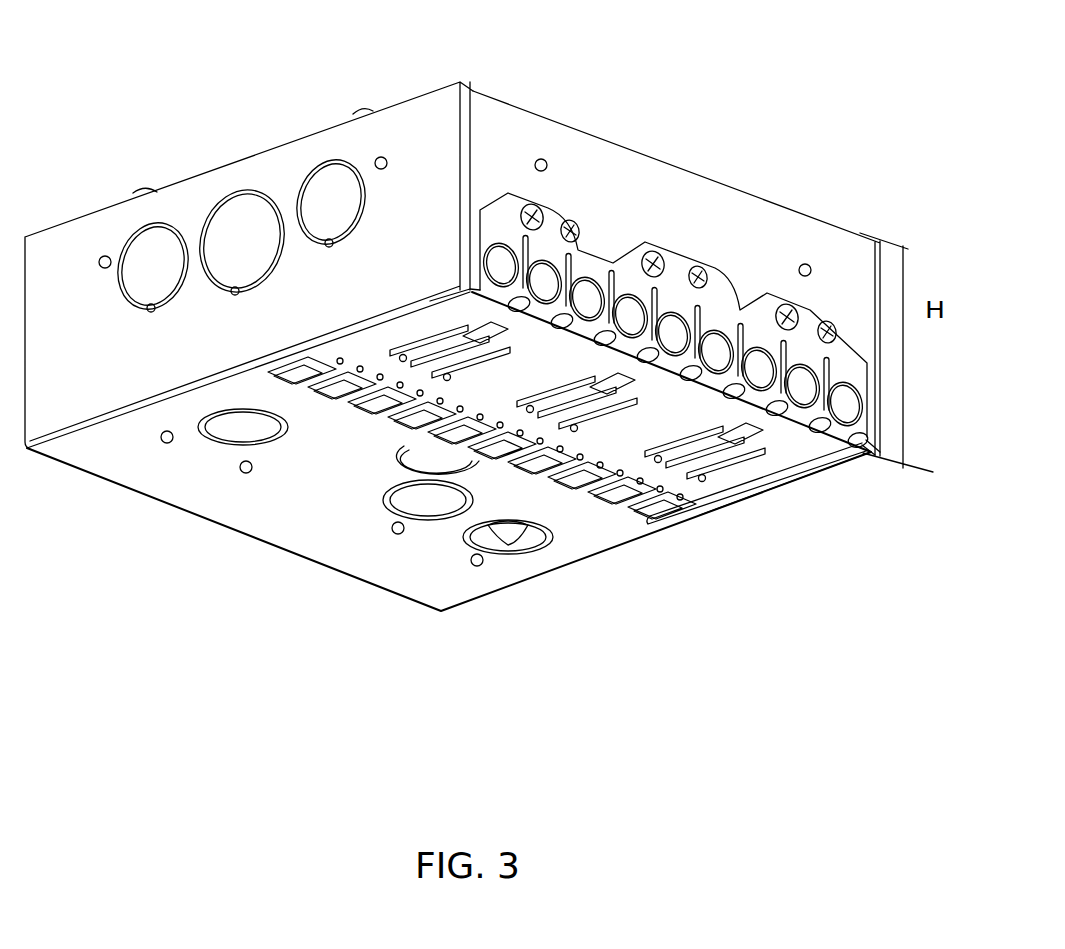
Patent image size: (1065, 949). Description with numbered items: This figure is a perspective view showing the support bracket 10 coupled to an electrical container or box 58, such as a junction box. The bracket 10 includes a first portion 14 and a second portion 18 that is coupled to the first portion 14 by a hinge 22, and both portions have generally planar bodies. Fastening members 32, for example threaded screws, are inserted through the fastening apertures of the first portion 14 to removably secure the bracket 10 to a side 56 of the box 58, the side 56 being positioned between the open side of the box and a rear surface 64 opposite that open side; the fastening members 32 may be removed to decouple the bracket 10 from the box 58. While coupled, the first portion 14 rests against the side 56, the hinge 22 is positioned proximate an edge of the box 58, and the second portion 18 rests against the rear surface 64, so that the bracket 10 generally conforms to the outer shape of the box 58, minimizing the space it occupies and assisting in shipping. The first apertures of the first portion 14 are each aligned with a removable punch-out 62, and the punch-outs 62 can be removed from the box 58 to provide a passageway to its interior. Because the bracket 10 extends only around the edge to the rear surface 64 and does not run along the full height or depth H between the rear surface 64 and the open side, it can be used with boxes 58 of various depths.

The support bracket 10 is at (801, 478).
The first portion 14 is at (630, 273).
The second portion 18 is at (715, 492).
The hinge 22 is at (872, 454).
The fastening members 32 is at (710, 275).
The side 56 is at (790, 242).
The electrical box 58 is at (232, 87).
The punch-outs 62 is at (588, 302).
The rear surface 64 is at (342, 540).